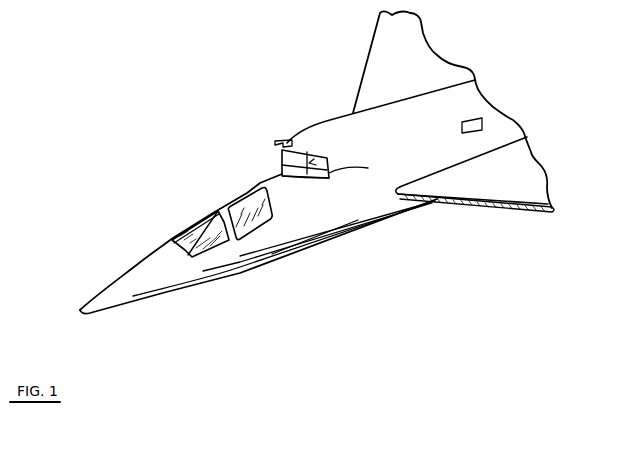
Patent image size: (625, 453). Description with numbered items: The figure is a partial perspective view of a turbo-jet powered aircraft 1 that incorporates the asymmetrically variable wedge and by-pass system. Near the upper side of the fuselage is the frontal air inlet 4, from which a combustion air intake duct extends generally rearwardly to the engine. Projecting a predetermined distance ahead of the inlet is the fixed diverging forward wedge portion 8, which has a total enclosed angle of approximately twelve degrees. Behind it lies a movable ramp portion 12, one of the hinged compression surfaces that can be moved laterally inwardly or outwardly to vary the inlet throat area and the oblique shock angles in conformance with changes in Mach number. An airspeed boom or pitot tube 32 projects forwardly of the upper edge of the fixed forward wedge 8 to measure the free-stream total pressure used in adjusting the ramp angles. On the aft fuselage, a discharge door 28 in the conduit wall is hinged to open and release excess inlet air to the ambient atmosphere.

The aircraft 1 is at (290, 120).
The frontal air inlet 4 is at (304, 186).
The fixed diverging forward wedge portion 8 is at (290, 165).
The movable ramp portion 12 is at (314, 160).
The discharge door 28 is at (463, 125).
The airspeed boom 32 is at (276, 143).